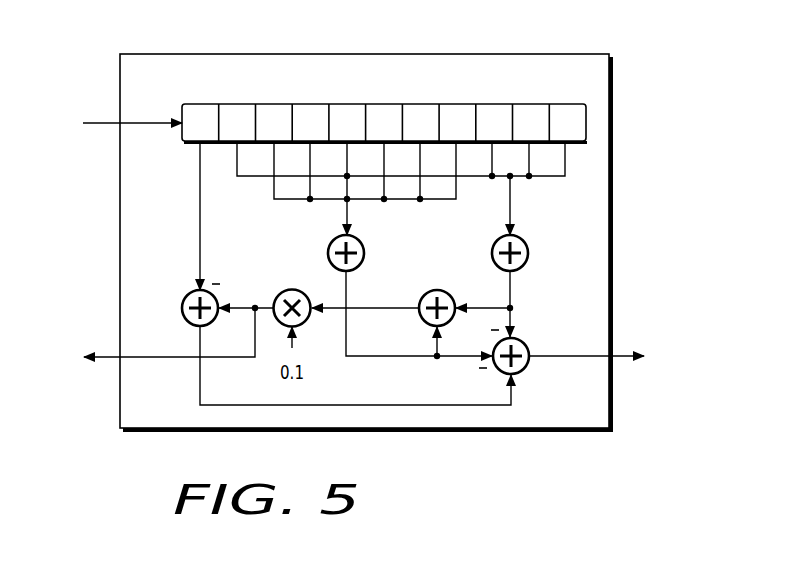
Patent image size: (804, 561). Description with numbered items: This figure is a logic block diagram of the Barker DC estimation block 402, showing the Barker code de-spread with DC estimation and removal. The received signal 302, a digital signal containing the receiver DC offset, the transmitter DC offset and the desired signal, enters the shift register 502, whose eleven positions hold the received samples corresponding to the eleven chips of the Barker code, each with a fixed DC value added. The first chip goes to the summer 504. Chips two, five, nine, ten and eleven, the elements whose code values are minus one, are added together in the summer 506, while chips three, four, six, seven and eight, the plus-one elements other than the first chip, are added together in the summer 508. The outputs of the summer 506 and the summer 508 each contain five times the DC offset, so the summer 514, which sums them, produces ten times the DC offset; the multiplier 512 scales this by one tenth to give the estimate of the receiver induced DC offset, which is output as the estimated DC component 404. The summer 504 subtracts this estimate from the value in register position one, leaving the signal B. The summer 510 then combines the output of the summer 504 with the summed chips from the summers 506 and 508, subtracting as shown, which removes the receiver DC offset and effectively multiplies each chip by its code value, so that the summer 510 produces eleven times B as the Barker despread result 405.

The Barker DC estimation block 402 is at (445, 54).
The received signal 302 is at (100, 127).
The shift register 502 is at (503, 99).
The summer 504 is at (184, 297).
The summer 506 is at (526, 240).
The summer 508 is at (362, 240).
The summer 510 is at (526, 343).
The multiplier 512 is at (291, 292).
The summer 514 is at (445, 291).
The estimated DC component 404 is at (131, 354).
The Barker despread result 405 is at (626, 356).